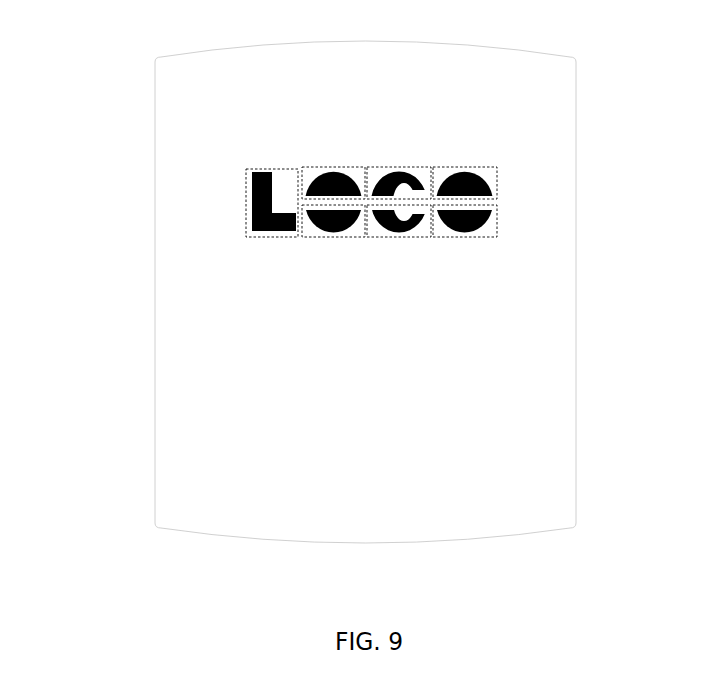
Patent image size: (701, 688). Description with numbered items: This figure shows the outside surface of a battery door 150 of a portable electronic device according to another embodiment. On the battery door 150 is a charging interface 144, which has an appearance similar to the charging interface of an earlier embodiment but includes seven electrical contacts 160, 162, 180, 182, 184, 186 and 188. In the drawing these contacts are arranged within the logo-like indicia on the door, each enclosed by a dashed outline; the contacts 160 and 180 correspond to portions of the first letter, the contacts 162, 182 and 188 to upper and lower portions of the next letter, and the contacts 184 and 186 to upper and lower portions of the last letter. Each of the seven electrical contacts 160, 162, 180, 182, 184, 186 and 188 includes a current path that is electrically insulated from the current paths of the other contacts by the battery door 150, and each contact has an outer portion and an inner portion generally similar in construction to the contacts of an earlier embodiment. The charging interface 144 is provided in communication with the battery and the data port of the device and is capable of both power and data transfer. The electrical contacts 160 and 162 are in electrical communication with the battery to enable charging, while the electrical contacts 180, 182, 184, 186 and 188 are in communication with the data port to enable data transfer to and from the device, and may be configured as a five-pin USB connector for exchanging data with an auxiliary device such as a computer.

The charging interface 144 is at (325, 229).
The battery door 150 is at (197, 451).
The electrical contact 160 is at (247, 183).
The electrical contact 162 is at (307, 185).
The electrical contact 180 is at (260, 232).
The electrical contact 182 is at (355, 182).
The electrical contact 184 is at (433, 178).
The electrical contact 186 is at (432, 223).
The electrical contact 188 is at (355, 225).